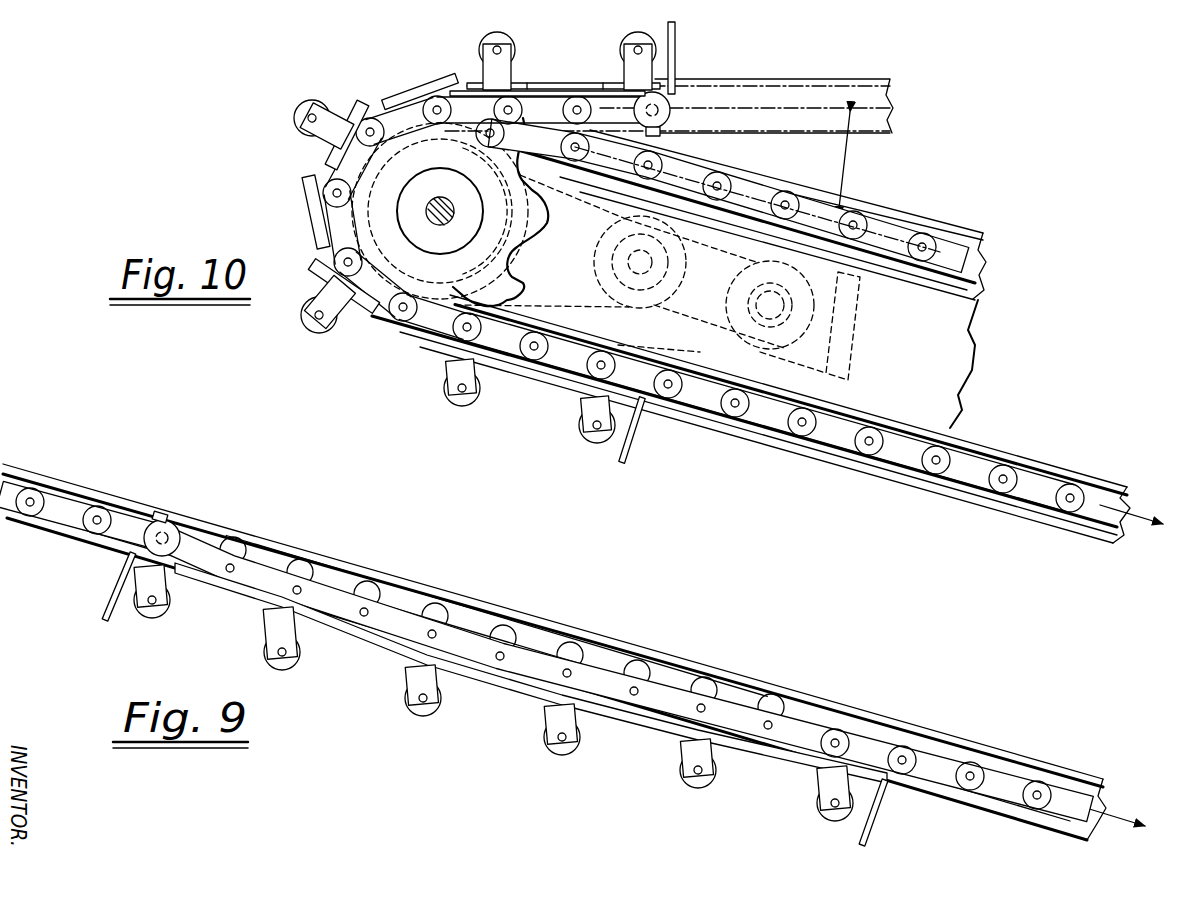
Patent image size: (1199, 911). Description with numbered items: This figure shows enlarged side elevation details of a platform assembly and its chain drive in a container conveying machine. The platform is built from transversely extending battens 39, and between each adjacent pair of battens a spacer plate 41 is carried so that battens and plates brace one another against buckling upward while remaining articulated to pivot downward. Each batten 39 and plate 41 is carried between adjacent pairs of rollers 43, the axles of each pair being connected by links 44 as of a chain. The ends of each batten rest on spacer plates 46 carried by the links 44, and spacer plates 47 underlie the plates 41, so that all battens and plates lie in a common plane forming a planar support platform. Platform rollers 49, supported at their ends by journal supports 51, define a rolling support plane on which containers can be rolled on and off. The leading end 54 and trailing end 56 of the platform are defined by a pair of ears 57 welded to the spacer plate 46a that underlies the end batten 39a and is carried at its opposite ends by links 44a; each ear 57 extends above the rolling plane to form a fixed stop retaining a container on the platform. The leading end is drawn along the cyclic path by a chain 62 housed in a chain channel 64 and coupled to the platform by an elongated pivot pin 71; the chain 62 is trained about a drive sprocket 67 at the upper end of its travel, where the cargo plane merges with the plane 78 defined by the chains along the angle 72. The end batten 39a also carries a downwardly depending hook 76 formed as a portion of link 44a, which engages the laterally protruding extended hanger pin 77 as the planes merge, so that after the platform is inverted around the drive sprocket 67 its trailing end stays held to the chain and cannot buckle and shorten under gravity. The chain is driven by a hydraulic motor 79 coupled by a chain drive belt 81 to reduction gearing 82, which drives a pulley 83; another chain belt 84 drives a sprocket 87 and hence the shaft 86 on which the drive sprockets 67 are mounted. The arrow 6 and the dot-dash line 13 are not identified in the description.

In FIG. 10, the conveyor direction arrow 6 is at (965, 458).
In FIG. 10, the horizontal conveying path 13 is at (804, 108).
In FIG. 10, the batten 39 is at (363, 102).
In FIG. 9, the batten 39 is at (188, 585).
In FIG. 10, the leading batten 39a is at (660, 82).
In FIG. 9, the leading batten 39a is at (810, 778).
In FIG. 10, the spacer plate 41 is at (306, 208).
In FIG. 9, the spacer plate 41 is at (388, 665).
In FIG. 10, the roller 43 is at (410, 180).
In FIG. 9, the roller 43 is at (332, 598).
In FIG. 10, the link 44 is at (380, 160).
In FIG. 9, the link 44 is at (272, 572).
In FIG. 10, the link 44a is at (617, 358).
In FIG. 9, the link 44a is at (866, 742).
In FIG. 10, the spacer plate 46 is at (366, 178).
In FIG. 9, the spacer plate 46 is at (340, 632).
In FIG. 10, the spacer plate 46a is at (642, 360).
In FIG. 9, the spacer plate 46a is at (899, 752).
In FIG. 10, the spacer plate 47 is at (350, 238).
In FIG. 9, the spacer plate 47 is at (256, 606).
In FIG. 10, the platform roller 49 is at (505, 36).
In FIG. 9, the platform roller 49 is at (285, 674).
In FIG. 10, the journal support 51 is at (513, 72).
In FIG. 9, the journal support 51 is at (266, 646).
In FIG. 10, the leading end 54 is at (648, 416).
In FIG. 9, the leading end 54 is at (900, 793).
In FIG. 10, the trailing end 56 is at (682, 70).
In FIG. 9, the trailing end 56 is at (120, 557).
In FIG. 10, the ear 57 is at (676, 40).
In FIG. 9, the ear 57 is at (110, 575).
In FIG. 10, the chain 62 is at (990, 257).
In FIG. 9, the chain 62 is at (1005, 778).
In FIG. 10, the chain channel 64 is at (930, 215).
In FIG. 10, the drive sprocket 67 is at (545, 232).
In FIG. 10, the pivot pin 71 is at (676, 362).
In FIG. 9, the pivot pin 71 is at (928, 762).
In FIG. 10, the angle 72 is at (848, 164).
In FIG. 10, the hook 76 is at (662, 134).
In FIG. 9, the hook 76 is at (162, 510).
In FIG. 10, the hanger pin 77 is at (670, 108).
In FIG. 9, the hanger pin 77 is at (190, 526).
In FIG. 10, the plane 78 is at (775, 200).
In FIG. 10, the hydraulic motor 79 is at (832, 366).
In FIG. 10, the chain drive belt 81 is at (718, 253).
In FIG. 10, the reduction gearing 82 is at (732, 265).
In FIG. 10, the pulley 83 is at (620, 264).
In FIG. 10, the chain belt 84 is at (540, 302).
In FIG. 10, the shaft 86 is at (434, 230).
In FIG. 10, the sprocket 87 is at (555, 205).